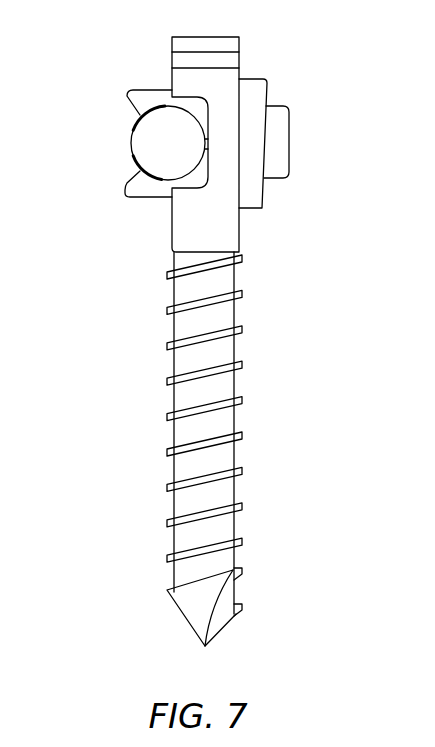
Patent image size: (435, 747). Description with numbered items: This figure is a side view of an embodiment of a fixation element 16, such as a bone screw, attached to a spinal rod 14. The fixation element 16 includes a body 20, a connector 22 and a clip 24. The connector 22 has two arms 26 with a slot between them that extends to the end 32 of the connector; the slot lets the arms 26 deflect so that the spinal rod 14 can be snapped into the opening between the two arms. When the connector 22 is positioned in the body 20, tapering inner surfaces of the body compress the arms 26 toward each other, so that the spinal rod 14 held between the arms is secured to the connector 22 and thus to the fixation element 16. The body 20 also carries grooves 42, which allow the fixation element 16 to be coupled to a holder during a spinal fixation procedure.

The fixation element 16 is at (104, 362).
The body 20 is at (223, 228).
The grooves 42 is at (213, 58).
The spinal rod 14 is at (155, 138).
The connector 22 is at (143, 89).
The arms 26 is at (145, 183).
The clip 24 is at (253, 172).
The end 32 is at (272, 157).